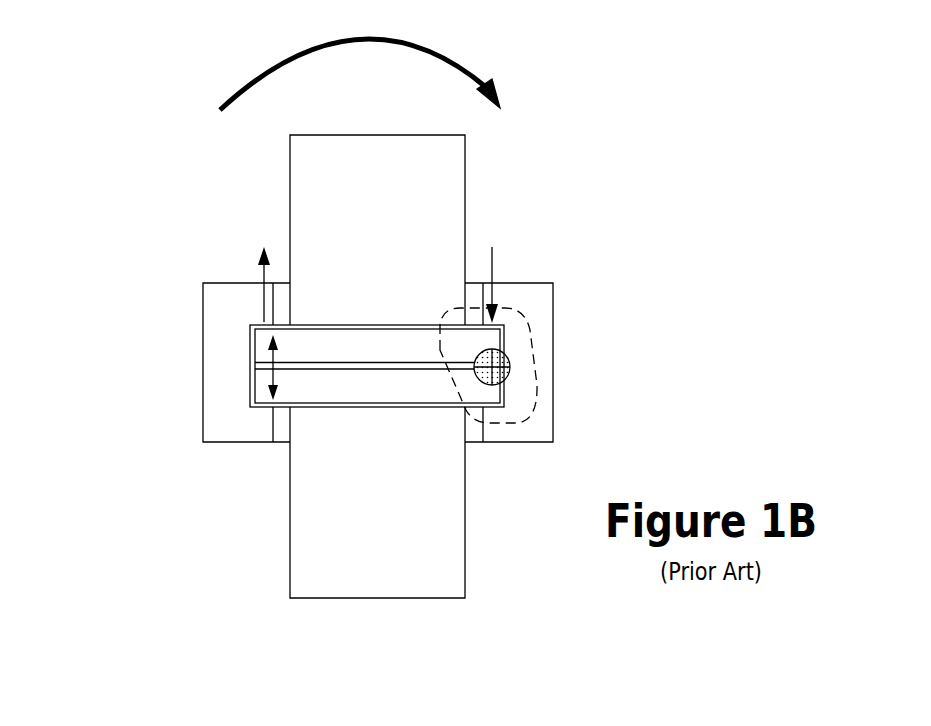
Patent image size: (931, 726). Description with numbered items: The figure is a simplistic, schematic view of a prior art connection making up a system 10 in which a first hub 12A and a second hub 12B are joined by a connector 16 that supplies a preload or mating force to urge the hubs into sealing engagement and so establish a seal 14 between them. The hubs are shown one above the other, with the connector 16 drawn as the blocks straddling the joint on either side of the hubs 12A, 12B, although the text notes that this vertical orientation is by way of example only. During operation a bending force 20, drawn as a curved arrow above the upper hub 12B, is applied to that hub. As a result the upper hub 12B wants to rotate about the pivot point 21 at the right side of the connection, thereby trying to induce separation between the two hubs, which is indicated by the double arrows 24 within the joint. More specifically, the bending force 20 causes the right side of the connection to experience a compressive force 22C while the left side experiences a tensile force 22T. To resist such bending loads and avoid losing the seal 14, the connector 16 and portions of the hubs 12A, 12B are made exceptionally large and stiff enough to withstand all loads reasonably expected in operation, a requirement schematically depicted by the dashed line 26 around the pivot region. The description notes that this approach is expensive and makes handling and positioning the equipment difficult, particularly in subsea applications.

The system 10 is at (126, 176).
The first hub 12A is at (313, 510).
The second hub 12B is at (308, 188).
The seal 14 is at (418, 378).
The connector 16 is at (213, 320).
The bending force 20 is at (477, 73).
The pivot point 21 is at (503, 372).
The compressive force 22C is at (492, 257).
The tensile force 22T is at (262, 272).
The double arrows 24 is at (273, 367).
The dashed line 26 is at (528, 340).